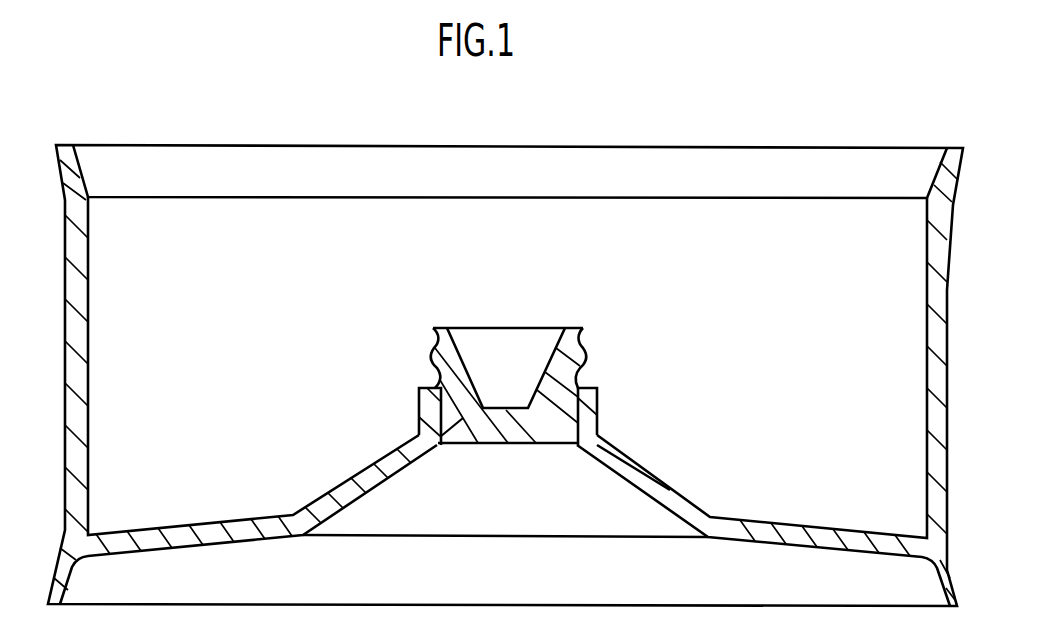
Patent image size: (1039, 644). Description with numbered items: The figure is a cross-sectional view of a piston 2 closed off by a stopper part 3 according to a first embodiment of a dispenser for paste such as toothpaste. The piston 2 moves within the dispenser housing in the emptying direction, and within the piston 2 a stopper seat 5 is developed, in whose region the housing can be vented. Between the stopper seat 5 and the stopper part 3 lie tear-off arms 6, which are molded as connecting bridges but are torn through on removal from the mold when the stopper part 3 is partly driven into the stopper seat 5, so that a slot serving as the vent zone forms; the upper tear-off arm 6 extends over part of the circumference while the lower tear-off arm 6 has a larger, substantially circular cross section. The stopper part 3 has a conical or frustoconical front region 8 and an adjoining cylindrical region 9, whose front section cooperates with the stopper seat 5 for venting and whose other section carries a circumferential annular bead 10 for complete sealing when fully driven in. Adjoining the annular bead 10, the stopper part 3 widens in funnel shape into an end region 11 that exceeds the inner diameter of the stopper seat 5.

The piston 2 is at (935, 258).
The stopper part 3 is at (543, 318).
The stopper seat 5 is at (598, 405).
The tear-off arms 6 is at (432, 383).
The front region 8 is at (463, 446).
The cylindrical region 9 is at (580, 375).
The annular bead 10 is at (437, 357).
The end region 11 is at (440, 328).